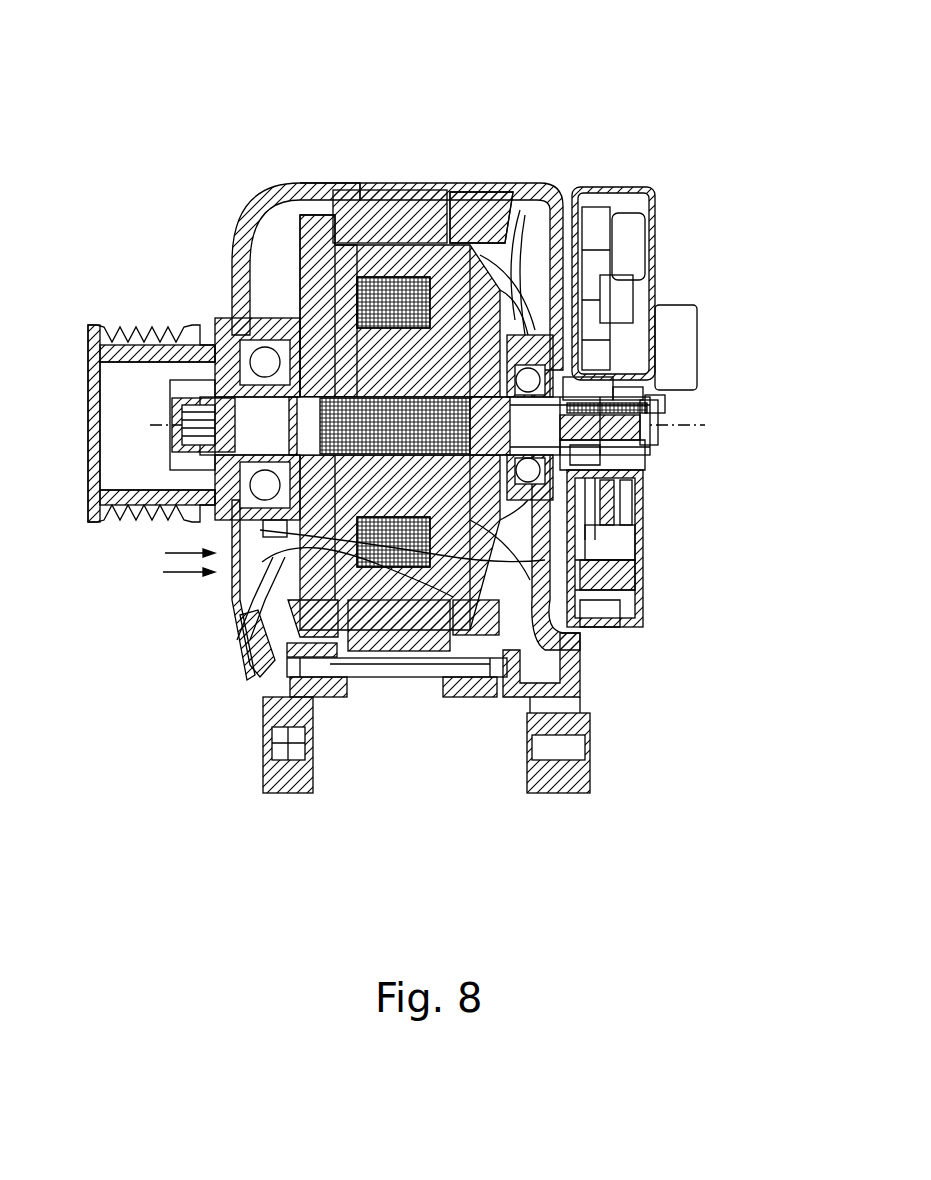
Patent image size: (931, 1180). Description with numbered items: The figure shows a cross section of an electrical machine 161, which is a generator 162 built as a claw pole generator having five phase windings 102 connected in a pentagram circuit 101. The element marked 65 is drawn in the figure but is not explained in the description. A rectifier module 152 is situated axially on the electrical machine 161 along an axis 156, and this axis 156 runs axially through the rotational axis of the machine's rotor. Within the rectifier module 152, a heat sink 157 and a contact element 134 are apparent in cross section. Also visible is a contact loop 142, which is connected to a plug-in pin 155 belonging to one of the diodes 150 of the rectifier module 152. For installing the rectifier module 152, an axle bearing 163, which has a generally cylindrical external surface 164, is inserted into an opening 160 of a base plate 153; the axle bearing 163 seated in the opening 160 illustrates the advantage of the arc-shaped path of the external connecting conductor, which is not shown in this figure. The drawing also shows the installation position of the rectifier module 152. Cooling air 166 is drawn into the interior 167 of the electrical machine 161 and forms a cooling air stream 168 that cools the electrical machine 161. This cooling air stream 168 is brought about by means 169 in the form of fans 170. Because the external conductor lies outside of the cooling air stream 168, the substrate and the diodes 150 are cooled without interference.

The pentagram circuit 101 is at (540, 160).
The phase windings 102 is at (370, 195).
The pole core 65 is at (333, 280).
The electrical machine 161 is at (322, 108).
The generator 162 is at (265, 197).
The opening 160 is at (587, 353).
The axle bearing 163 is at (655, 370).
The external surface 164 is at (665, 405).
The rectifier module 152 is at (700, 408).
The axis 156 is at (672, 425).
The plug-in pin 155 is at (645, 488).
The diodes 150 is at (660, 506).
The heat sink 157 is at (642, 532).
The contact element 134 is at (645, 563).
The contact loop 142 is at (612, 625).
The base plate 153 is at (610, 653).
The cooling air 166 is at (175, 565).
The interior 167 is at (263, 637).
The cooling air stream 168 is at (237, 620).
The means 169 is at (453, 633).
The fans 170 is at (481, 217).